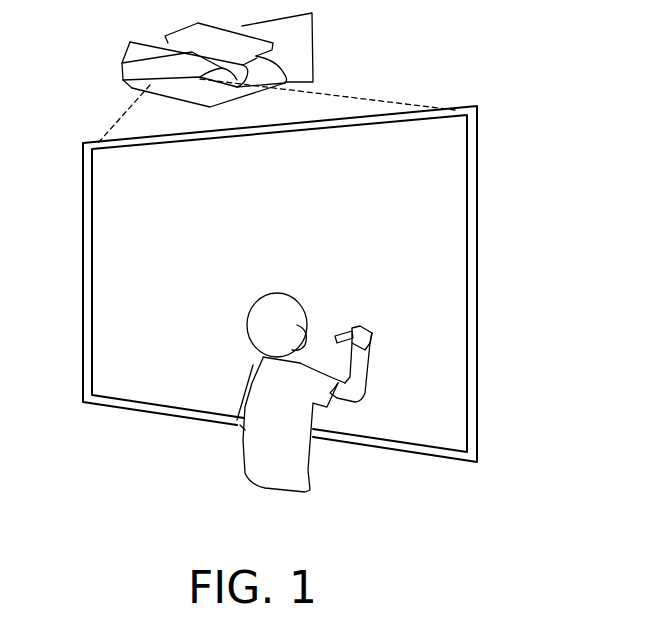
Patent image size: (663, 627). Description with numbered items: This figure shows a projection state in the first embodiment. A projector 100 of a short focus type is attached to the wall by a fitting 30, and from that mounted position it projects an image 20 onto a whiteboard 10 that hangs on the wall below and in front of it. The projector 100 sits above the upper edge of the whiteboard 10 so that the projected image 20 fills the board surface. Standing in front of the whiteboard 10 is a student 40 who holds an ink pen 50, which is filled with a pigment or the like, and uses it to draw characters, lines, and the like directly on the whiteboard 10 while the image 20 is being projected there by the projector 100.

The projector 100 is at (123, 50).
The fitting 30 is at (307, 42).
The whiteboard 10 is at (477, 106).
The image 20 is at (478, 147).
The student 40 is at (307, 463).
The ink pen 50 is at (348, 325).